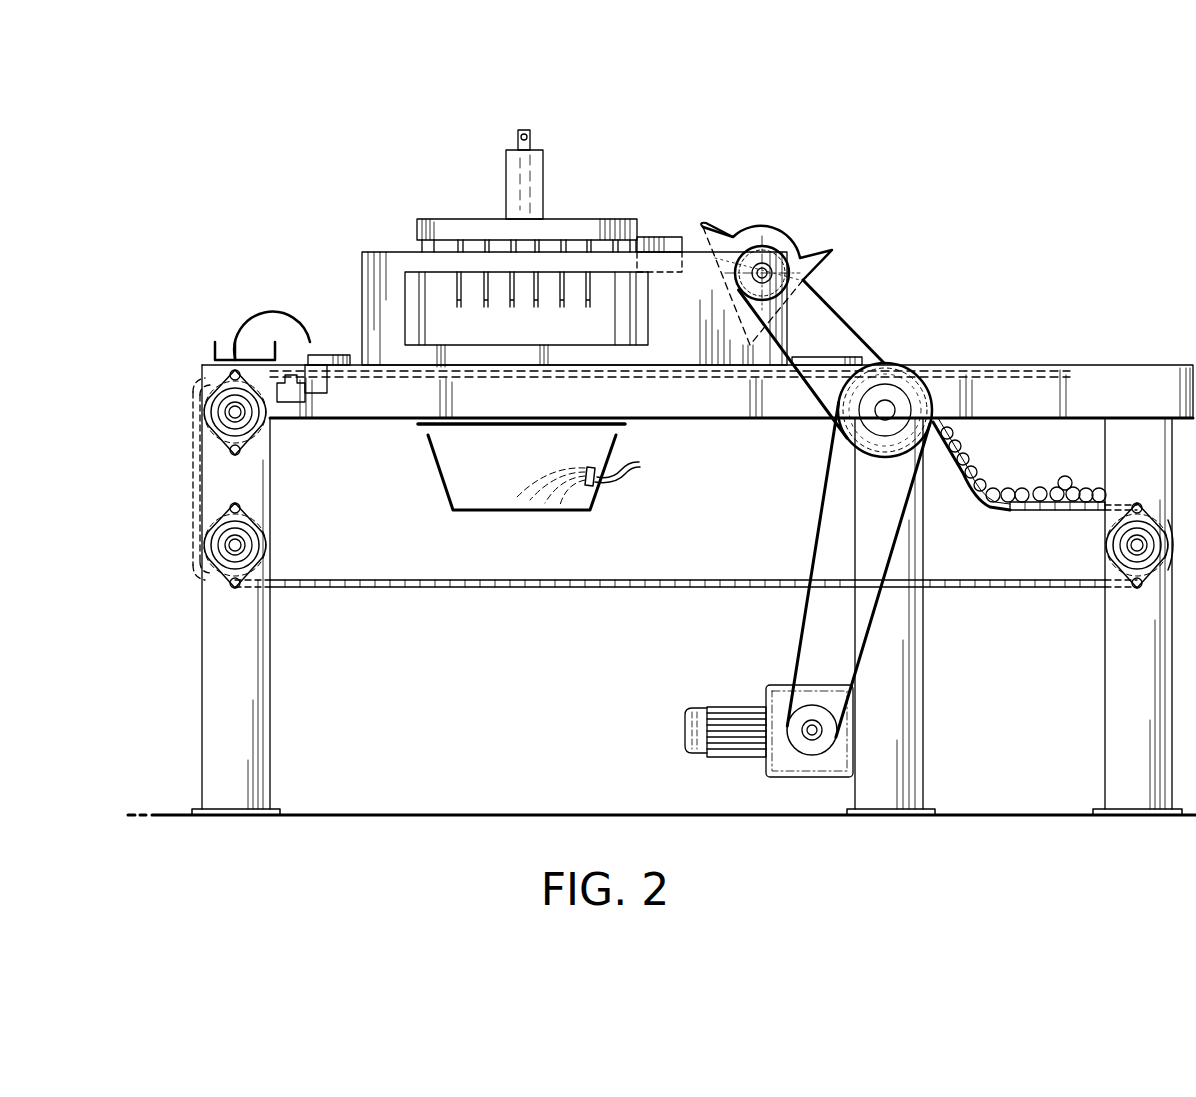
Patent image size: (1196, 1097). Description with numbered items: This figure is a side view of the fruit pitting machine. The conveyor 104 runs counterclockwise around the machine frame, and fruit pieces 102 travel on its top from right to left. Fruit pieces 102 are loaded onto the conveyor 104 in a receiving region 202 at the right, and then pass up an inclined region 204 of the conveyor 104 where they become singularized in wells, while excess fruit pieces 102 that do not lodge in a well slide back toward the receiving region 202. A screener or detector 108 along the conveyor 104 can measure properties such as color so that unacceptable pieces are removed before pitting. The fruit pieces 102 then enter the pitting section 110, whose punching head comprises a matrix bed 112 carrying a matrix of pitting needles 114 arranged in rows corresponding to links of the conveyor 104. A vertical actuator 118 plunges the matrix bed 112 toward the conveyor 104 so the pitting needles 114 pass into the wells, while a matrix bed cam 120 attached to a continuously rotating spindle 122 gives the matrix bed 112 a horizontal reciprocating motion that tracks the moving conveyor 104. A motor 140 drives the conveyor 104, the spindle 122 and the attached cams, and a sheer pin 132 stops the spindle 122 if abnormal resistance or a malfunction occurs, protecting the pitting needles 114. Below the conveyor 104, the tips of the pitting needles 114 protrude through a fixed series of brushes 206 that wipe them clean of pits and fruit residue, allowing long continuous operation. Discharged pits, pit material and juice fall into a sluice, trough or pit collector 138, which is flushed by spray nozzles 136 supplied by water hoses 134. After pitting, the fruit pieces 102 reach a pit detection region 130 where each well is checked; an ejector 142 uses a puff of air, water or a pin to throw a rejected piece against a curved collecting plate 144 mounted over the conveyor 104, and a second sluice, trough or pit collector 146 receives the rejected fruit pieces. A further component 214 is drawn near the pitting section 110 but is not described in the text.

The fruit pieces 102 is at (1048, 512).
The conveyor 104 is at (1058, 583).
The screener or detector 108 is at (823, 357).
The pitting section 110 is at (653, 102).
The matrix bed 112 is at (456, 225).
The pitting needles 114 is at (487, 305).
The vertical actuator 118 is at (512, 168).
The matrix bed cam 120 is at (725, 227).
The spindle 122 is at (762, 267).
The pit detection region 130 is at (326, 363).
The sheer pin 132 is at (888, 407).
The water hoses 134 is at (620, 485).
The spray nozzles 136 is at (593, 467).
The sluice, trough or pit collector 138 is at (505, 513).
The motor 140 is at (783, 690).
The ejector 142 is at (290, 410).
The curved collecting plate 144 is at (273, 305).
The second sluice, trough or pit collector 146 is at (213, 347).
The receiving region 202 is at (1103, 483).
The inclined region 204 is at (955, 408).
The series of brushes 206 is at (480, 427).
The housing extension 214 is at (663, 241).